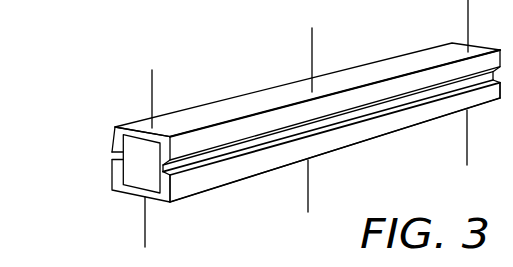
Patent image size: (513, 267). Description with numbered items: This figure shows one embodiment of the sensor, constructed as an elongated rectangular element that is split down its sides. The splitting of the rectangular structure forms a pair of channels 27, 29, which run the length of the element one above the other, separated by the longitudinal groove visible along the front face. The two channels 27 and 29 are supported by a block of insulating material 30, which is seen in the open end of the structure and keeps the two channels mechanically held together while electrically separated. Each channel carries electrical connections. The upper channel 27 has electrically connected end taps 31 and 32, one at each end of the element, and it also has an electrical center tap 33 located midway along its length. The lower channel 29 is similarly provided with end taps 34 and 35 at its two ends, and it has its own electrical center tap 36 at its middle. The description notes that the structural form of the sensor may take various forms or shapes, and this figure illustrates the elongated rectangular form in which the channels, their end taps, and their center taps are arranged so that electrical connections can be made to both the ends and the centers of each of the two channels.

The channel 27 is at (265, 100).
The channel 29 is at (220, 175).
The block of insulating material 30 is at (129, 164).
The end tap 31 is at (152, 84).
The end tap 32 is at (468, 13).
The center tap 33 is at (313, 34).
The end tap 34 is at (145, 225).
The end tap 35 is at (467, 155).
The center tap 36 is at (310, 185).